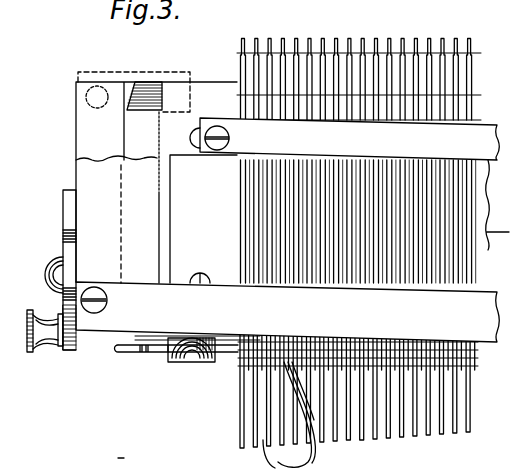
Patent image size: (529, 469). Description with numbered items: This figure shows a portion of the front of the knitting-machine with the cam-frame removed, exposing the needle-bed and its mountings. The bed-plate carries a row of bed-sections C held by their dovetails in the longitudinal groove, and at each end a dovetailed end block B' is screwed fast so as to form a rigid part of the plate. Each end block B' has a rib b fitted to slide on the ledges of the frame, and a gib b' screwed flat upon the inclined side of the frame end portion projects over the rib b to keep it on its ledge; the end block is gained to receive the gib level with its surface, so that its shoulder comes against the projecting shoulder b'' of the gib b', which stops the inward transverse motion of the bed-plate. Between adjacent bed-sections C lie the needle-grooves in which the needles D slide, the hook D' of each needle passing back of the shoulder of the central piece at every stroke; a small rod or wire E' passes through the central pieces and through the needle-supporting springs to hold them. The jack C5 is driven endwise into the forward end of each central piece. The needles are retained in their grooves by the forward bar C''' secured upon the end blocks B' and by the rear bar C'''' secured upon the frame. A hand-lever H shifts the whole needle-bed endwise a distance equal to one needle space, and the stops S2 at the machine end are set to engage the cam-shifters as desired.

The needle D is at (372, 75).
The hook D' is at (364, 386).
The bed-section C is at (361, 221).
The forward bar C''' is at (307, 246).
The rear bar C'''' is at (287, 307).
The jack C5 is at (108, 463).
The end block B' is at (156, 182).
The rib b is at (203, 219).
The gib b' is at (130, 224).
The projecting shoulder b'' is at (134, 81).
The stop S2 is at (51, 271).
The rod or wire E' is at (203, 364).
The hand-lever H is at (297, 415).